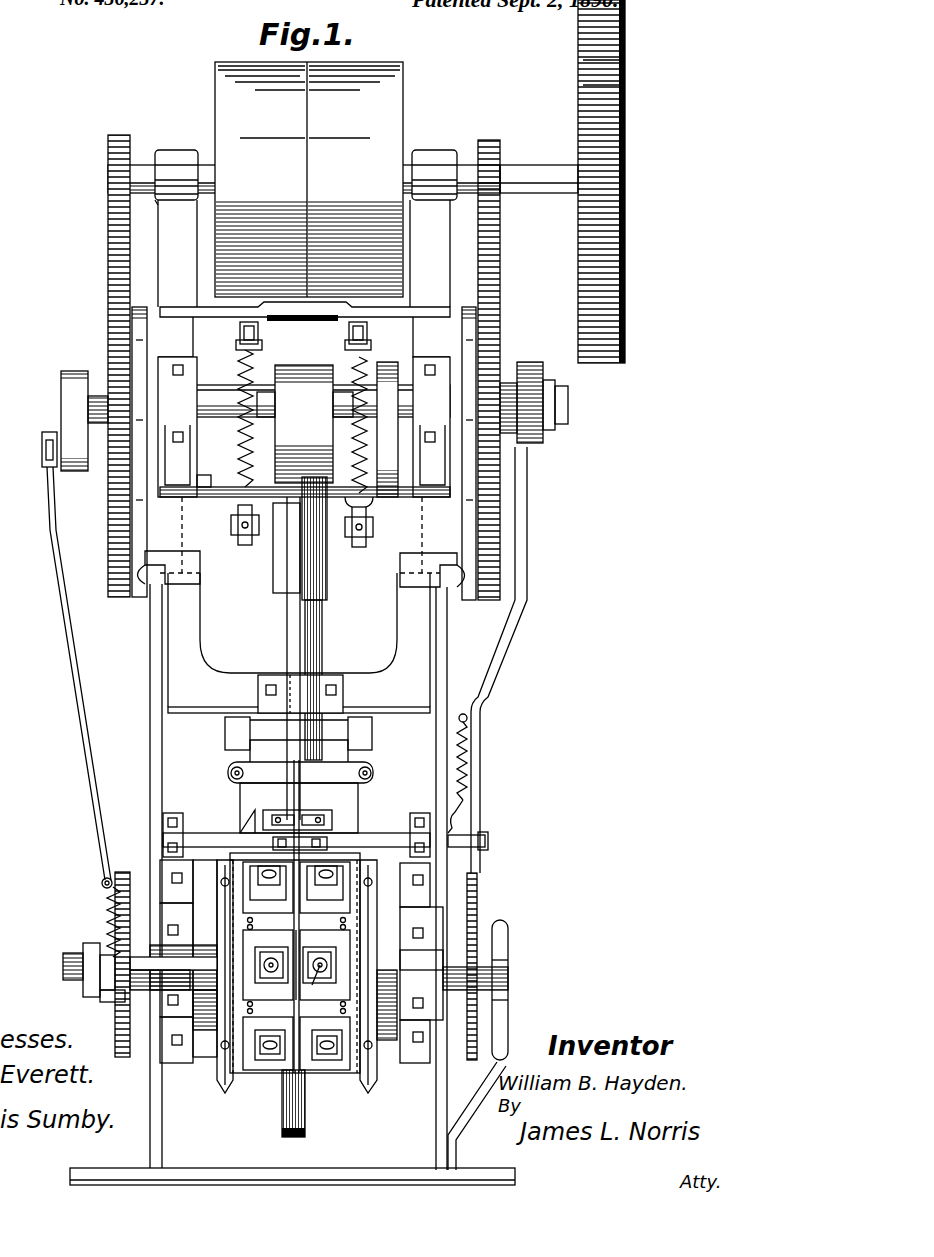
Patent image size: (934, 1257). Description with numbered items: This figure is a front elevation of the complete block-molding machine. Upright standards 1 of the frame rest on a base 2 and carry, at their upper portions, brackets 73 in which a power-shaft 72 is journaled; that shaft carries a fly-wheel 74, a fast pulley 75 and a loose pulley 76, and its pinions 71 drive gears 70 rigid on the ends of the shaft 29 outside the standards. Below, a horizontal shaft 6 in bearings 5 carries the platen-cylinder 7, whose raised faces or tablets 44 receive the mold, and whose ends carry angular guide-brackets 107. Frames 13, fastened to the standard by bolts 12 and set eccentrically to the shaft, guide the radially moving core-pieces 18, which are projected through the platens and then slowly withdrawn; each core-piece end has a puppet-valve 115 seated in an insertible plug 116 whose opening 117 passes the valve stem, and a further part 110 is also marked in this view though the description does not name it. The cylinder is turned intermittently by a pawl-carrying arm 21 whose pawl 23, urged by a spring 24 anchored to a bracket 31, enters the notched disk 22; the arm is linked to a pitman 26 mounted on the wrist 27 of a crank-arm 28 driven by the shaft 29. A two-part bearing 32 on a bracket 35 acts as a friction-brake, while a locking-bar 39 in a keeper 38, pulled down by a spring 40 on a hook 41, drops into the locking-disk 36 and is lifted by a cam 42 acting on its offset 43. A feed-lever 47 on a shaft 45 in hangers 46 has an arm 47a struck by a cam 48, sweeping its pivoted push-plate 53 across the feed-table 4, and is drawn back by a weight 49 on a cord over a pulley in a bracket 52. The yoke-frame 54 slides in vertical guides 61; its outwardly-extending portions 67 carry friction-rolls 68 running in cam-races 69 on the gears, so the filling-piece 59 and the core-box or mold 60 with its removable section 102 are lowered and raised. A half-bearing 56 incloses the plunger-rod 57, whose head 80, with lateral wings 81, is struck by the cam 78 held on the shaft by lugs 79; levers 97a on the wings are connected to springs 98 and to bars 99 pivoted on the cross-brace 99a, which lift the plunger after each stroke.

The upright standards 1 is at (298, 871).
The base 2 is at (250, 1175).
The feed-table 4 is at (378, 845).
The bearings 5 is at (432, 968).
The horizontal shaft 6 is at (63, 966).
The platen-cylinder 7 is at (232, 1090).
The bolts 12 is at (172, 873).
The frames 13 is at (329, 992).
The core-pieces 18 is at (295, 963).
The pawl-carrying arm 21 is at (110, 1002).
The notched disk 22 is at (126, 954).
The pawl 23 is at (115, 1010).
The spring 24 is at (107, 918).
The pitman 26 is at (73, 695).
The wrist 27 is at (42, 451).
The crank-arm 28 is at (61, 418).
The shaft 29 is at (568, 407).
The bracket 31 is at (100, 884).
The two-part bearing 32 is at (505, 925).
The bracket 35 is at (477, 1116).
The locking-disk 36 is at (486, 966).
The keeper or guide 38 is at (480, 838).
The locking-bar 39 is at (501, 660).
The spring 40 is at (468, 775).
The hook 41 is at (460, 812).
The cam 42 is at (535, 440).
The offset 43 is at (532, 362).
The raised faces or tablets 44 is at (271, 974).
The shaft 45 is at (220, 476).
The hangers 46 is at (304, 427).
The feed-lever 47 is at (287, 625).
The arm 47a is at (395, 420).
The cam 48 is at (387, 362).
The weight 49 is at (305, 1103).
The bracket 52 is at (327, 843).
The push-plate 53 is at (326, 813).
The yoke-frame 54 is at (232, 690).
The detachable half-bearing 56 is at (312, 685).
The plunger-rod 57 is at (325, 680).
The filling-piece 59 is at (298, 739).
The core-box or mold 60 is at (299, 807).
The vertical guides 61 is at (300, 612).
The outwardly-extending portions 67 is at (301, 569).
The friction-rolls 68 is at (143, 584).
The cam-races 69 is at (140, 307).
The gears 70 is at (108, 308).
The pinions 71 is at (108, 161).
The power-shaft 72 is at (540, 180).
The brackets 73 is at (302, 253).
The fly-wheel 74 is at (645, 218).
The fast pulley 75 is at (309, 179).
The loose pulley 76 is at (355, 181).
The cam 78 is at (330, 415).
The lugs 79 is at (275, 408).
The head 80 is at (327, 591).
The lateral wings 81 is at (374, 517).
The levers 97a is at (245, 545).
The springs 98 is at (238, 449).
The bars 99 is at (358, 322).
The cross-brace 99a is at (238, 317).
The removable section 102 is at (300, 772).
The angular guide-brackets 107 is at (377, 983).
The rod 110 is at (311, 962).
The puppet-valve 115 is at (318, 958).
The insertible plug 116 is at (322, 983).
The opening 117 is at (208, 1082).